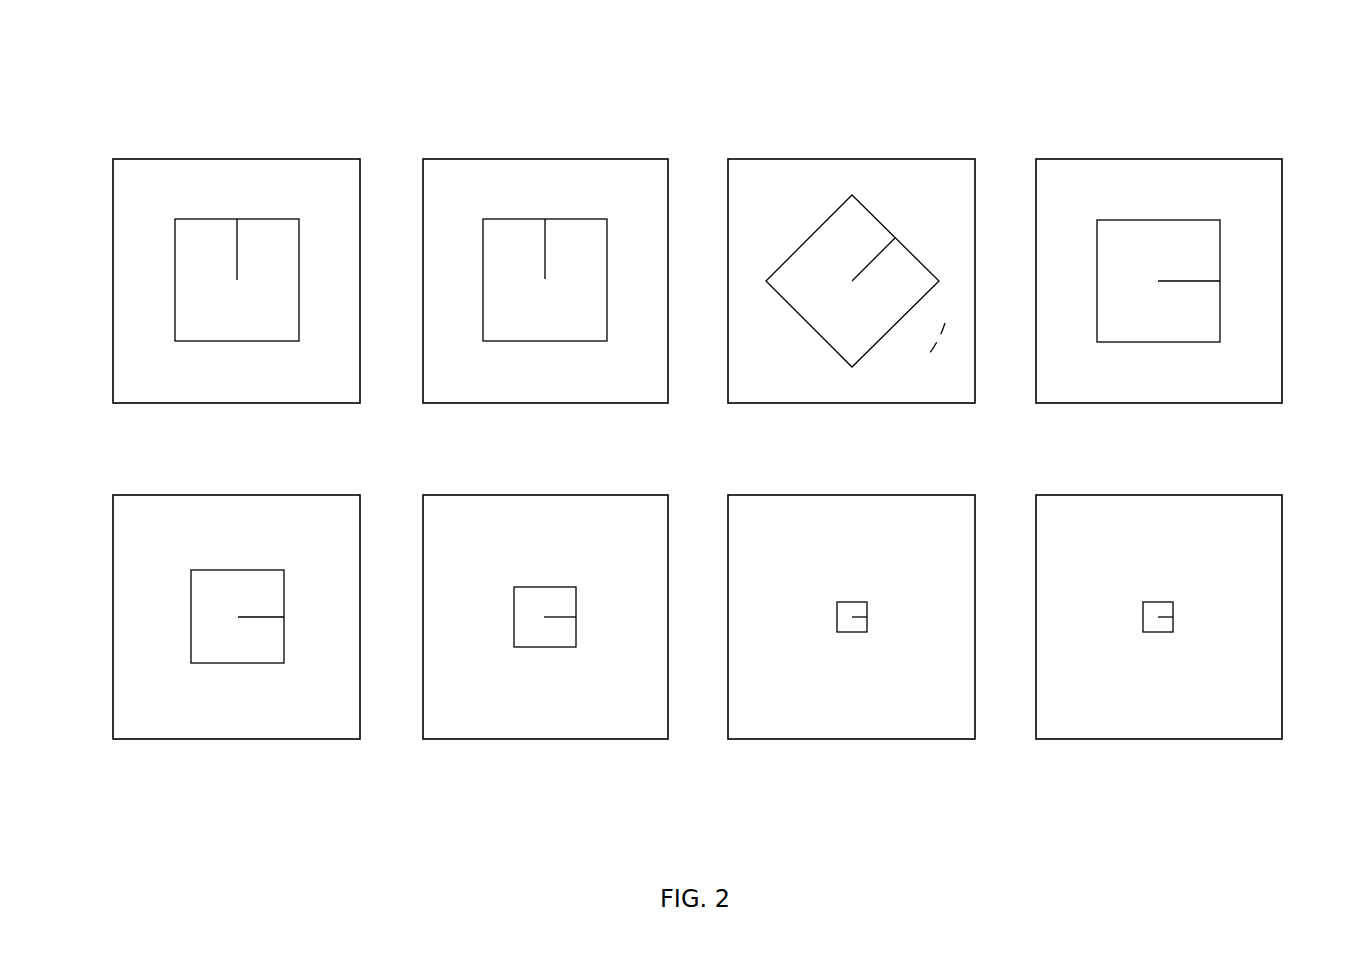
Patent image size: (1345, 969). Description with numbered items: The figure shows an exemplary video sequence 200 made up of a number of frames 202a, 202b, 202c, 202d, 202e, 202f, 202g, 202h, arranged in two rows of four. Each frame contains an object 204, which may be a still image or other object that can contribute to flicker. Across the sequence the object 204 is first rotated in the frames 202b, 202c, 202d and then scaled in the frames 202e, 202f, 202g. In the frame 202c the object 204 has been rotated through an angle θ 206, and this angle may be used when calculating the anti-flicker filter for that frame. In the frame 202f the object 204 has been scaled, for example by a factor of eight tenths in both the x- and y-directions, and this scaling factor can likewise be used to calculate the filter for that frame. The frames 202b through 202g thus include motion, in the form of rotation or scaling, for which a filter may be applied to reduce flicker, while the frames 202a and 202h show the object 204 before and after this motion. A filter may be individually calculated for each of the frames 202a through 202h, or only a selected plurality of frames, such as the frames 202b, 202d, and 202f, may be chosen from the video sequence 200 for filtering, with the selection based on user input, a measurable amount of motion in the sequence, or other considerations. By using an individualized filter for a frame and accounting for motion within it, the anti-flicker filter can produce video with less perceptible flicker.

The video sequence 200 is at (268, 66).
The frame 202a is at (270, 158).
The frame 202b is at (558, 158).
The frame 202c is at (852, 158).
The frame 202d is at (1157, 158).
The frame 202e is at (299, 740).
The frame 202f is at (575, 740).
The frame 202g is at (863, 740).
The frame 202h is at (1165, 740).
The object 204 is at (299, 280).
The angle θ 206 is at (883, 372).